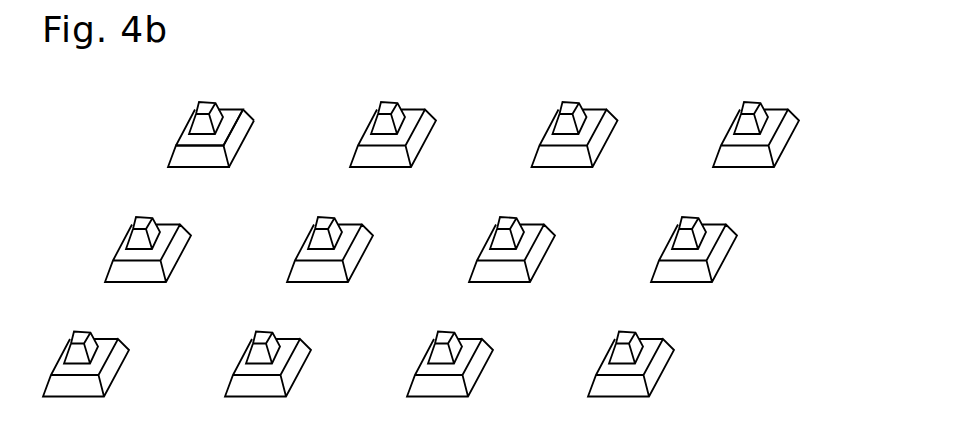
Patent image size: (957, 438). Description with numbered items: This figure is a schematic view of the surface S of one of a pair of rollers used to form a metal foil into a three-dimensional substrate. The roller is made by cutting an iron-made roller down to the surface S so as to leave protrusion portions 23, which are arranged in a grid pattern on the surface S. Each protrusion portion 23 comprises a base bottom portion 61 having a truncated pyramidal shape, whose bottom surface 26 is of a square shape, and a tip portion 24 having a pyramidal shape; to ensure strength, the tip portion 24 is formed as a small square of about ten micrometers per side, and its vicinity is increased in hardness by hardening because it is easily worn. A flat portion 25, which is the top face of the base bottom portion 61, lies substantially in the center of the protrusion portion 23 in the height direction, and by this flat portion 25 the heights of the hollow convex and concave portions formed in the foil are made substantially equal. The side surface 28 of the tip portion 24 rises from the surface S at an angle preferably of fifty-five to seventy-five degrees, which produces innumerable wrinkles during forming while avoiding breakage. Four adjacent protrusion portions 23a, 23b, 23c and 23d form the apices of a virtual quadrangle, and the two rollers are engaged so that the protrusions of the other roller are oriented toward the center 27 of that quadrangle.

The protrusion portion 23 is at (177, 157).
The protrusion portion 23a is at (366, 129).
The protrusion portion 23b is at (299, 251).
The protrusion portion 23c is at (537, 267).
The protrusion portion 23d is at (603, 142).
The tip portion 24 is at (200, 101).
The flat portion 25 is at (232, 113).
The bottom surface 26 is at (239, 149).
The center of virtual quadrangle 27 is at (459, 214).
The side surface 28 is at (217, 116).
The base bottom portion 61 is at (248, 128).
The surface S is at (78, 256).